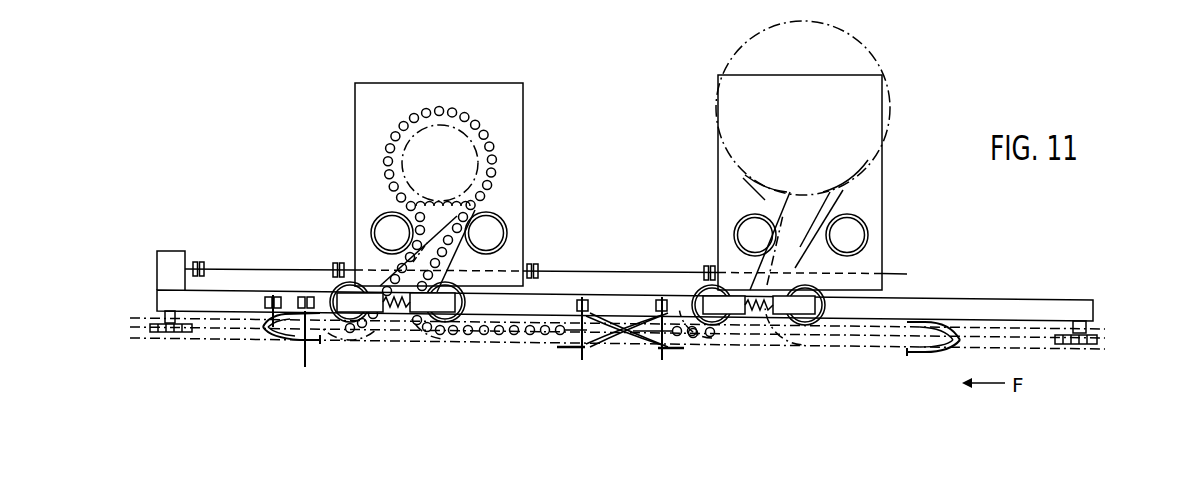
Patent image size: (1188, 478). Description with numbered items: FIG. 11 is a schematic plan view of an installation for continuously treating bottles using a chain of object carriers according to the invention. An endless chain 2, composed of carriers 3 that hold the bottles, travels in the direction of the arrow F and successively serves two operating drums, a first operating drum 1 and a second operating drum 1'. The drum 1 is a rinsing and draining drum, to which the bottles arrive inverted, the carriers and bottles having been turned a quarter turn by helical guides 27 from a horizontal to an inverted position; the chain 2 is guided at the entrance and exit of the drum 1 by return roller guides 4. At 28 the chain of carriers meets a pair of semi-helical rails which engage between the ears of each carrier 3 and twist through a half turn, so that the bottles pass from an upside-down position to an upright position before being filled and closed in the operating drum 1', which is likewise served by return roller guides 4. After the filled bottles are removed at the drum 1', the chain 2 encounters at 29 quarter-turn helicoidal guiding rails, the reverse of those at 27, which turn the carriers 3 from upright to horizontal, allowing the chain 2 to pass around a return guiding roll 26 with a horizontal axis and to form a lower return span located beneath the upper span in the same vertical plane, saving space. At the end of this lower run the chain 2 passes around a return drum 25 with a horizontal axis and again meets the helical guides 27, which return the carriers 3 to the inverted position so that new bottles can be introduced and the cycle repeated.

The operating drum 1 is at (803, 110).
The operating drum 1' is at (440, 165).
The chain 2 is at (445, 344).
The carriers 3 is at (483, 133).
The return roller guides 4 is at (382, 226).
The return drum 25 is at (1088, 344).
The return guiding roll 26 is at (170, 332).
The helical guides 27 is at (918, 364).
The semi-helical rails 28 is at (628, 352).
The quarter-turn helicoidal guiding rails 29 is at (285, 346).